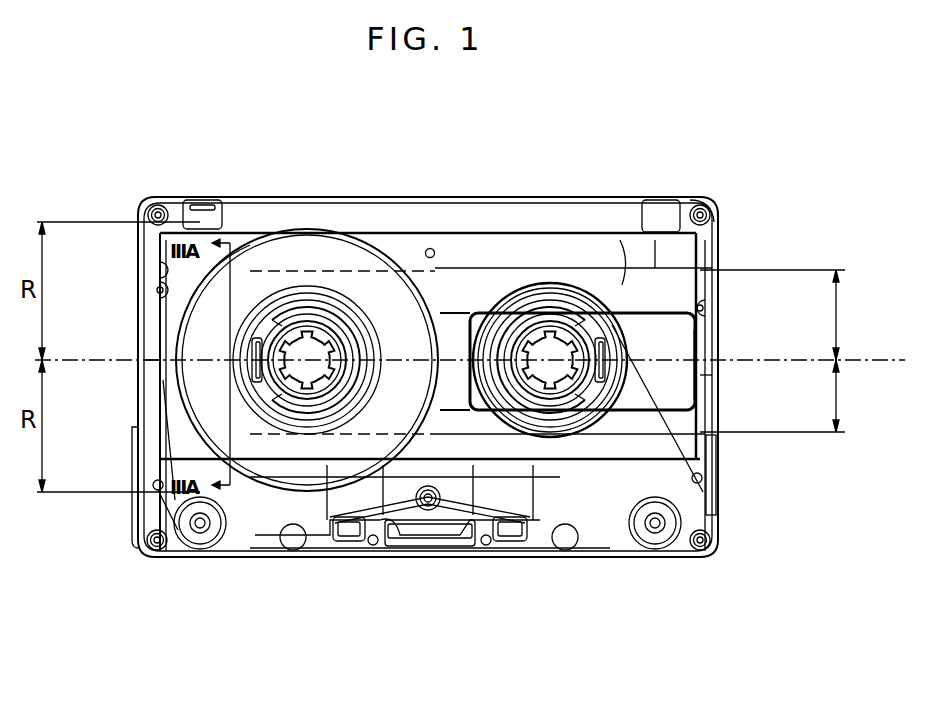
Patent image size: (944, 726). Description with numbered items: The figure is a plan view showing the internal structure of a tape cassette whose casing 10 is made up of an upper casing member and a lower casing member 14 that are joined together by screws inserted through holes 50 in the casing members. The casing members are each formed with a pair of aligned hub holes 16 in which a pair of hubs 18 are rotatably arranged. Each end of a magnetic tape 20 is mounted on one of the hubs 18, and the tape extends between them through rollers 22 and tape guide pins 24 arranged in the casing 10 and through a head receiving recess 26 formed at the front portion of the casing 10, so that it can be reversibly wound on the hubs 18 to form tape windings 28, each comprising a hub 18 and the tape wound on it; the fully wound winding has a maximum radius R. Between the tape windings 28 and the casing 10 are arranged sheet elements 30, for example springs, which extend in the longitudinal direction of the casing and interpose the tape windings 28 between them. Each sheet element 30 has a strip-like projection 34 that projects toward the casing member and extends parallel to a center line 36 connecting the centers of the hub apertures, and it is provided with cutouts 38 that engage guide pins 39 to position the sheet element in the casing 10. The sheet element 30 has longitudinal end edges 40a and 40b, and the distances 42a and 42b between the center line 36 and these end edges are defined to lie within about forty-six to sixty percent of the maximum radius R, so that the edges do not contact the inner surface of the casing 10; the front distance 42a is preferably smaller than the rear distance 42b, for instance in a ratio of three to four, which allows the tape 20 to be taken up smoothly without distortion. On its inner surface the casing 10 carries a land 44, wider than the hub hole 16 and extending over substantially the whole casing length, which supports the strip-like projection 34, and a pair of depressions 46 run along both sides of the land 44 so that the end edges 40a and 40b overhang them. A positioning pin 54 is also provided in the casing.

The casing 10 is at (558, 232).
The lower casing member 14 is at (715, 212).
The hub holes 16 is at (530, 320).
The hubs 18 is at (301, 312).
The magnetic tape 20 is at (265, 552).
The rollers 22 is at (200, 552).
The tape guide pins 24 is at (153, 485).
The head receiving recess 26 is at (461, 568).
The tape windings 28 is at (297, 310).
The sheet elements 30 is at (624, 285).
The strip-like projection 34 is at (705, 350).
The center line 36 is at (98, 362).
The cutouts 38 is at (160, 268).
The guide pins 39 is at (160, 290).
The end edge 40a is at (713, 440).
The end edge 40b is at (472, 265).
The distance 42a is at (795, 396).
The distance 42b is at (795, 315).
The land 44 is at (700, 380).
The depressions 46 is at (657, 260).
The holes 50 is at (158, 205).
The positioning pin 54 is at (428, 248).